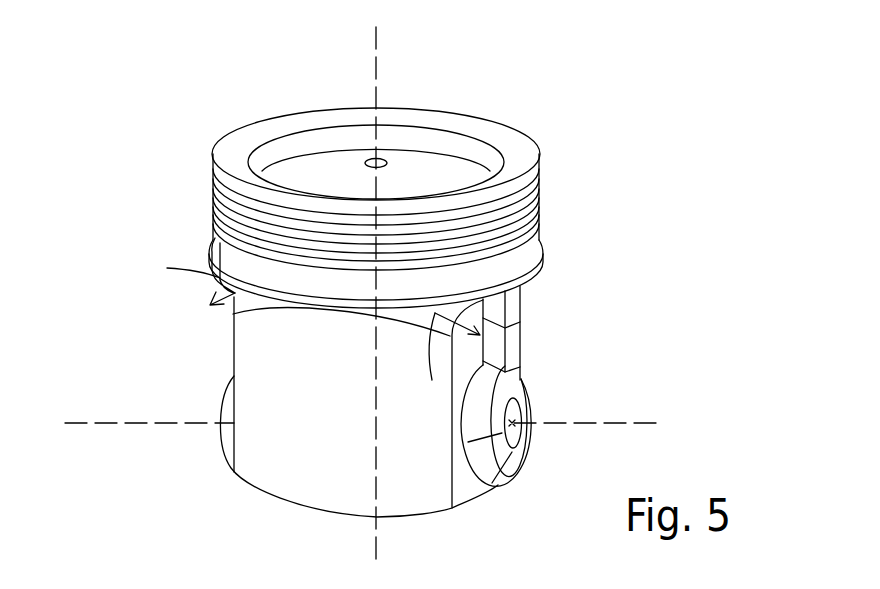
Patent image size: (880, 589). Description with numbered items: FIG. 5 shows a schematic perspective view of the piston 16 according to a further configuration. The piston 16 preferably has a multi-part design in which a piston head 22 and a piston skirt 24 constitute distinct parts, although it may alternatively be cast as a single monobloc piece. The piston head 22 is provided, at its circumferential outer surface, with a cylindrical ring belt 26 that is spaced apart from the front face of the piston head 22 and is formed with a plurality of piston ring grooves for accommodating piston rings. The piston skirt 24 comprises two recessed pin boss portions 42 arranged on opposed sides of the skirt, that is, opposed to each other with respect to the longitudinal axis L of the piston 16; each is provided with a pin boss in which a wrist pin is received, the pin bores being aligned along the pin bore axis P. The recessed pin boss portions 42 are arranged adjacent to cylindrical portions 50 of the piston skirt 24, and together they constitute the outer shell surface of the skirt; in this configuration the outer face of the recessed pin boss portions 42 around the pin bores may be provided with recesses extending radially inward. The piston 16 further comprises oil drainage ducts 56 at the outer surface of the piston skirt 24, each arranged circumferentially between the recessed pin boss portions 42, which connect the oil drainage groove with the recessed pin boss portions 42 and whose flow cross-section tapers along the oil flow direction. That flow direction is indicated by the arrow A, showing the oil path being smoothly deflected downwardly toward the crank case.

The piston 16 is at (462, 88).
The piston head 22 is at (233, 130).
The piston skirt 24 is at (217, 395).
The ring belt 26 is at (552, 192).
The recessed pin boss portion 42 is at (528, 337).
The cylindrical portion 50 is at (252, 468).
The oil drainage duct 56 is at (476, 301).
The longitudinal axis L is at (377, 50).
The pin bore axis P is at (628, 423).
The arrow A is at (313, 334).